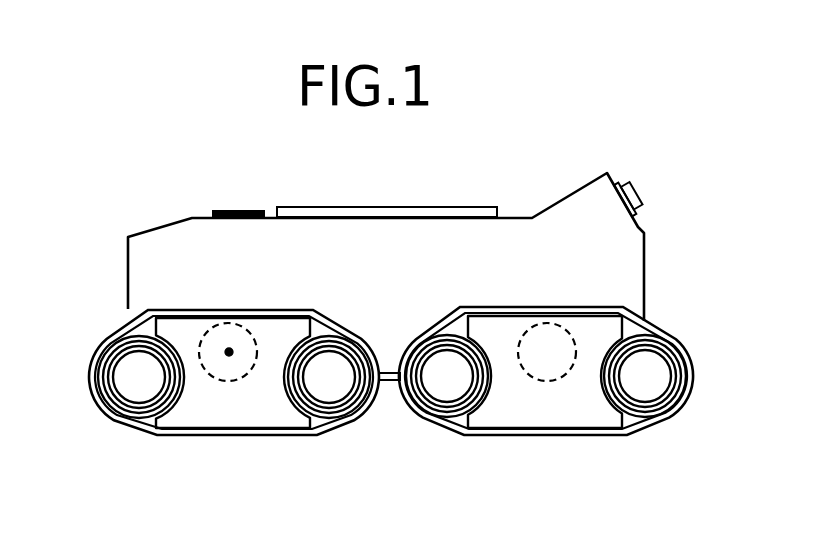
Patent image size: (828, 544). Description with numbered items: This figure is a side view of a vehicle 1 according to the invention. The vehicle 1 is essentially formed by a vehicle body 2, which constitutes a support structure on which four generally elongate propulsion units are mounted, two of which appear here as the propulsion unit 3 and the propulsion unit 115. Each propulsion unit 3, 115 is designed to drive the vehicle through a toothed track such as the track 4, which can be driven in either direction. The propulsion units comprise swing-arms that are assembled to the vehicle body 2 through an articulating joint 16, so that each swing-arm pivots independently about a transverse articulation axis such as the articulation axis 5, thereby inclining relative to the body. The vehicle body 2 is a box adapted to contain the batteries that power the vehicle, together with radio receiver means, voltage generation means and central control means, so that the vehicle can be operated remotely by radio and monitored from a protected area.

The vehicle 1 is at (661, 201).
The vehicle body 2 is at (618, 255).
The propulsion unit 3 is at (234, 371).
The propulsion unit 115 is at (563, 433).
The track 4 is at (336, 322).
The articulation axis 5 is at (229, 352).
The articulating joint 16 is at (206, 318).